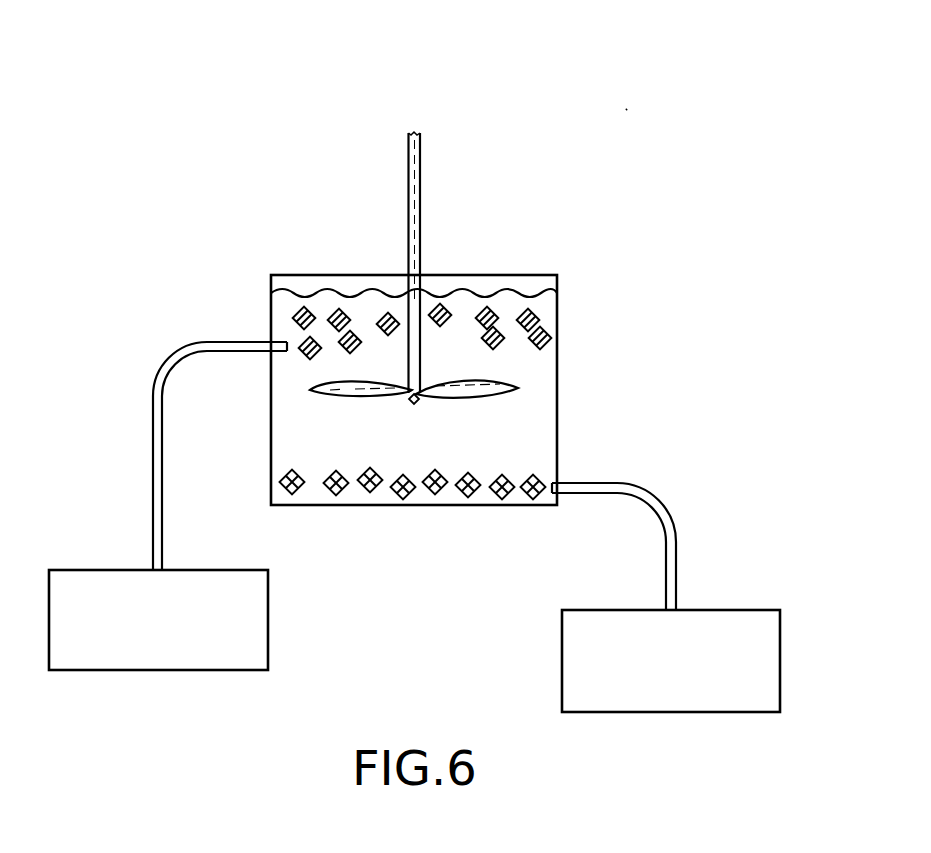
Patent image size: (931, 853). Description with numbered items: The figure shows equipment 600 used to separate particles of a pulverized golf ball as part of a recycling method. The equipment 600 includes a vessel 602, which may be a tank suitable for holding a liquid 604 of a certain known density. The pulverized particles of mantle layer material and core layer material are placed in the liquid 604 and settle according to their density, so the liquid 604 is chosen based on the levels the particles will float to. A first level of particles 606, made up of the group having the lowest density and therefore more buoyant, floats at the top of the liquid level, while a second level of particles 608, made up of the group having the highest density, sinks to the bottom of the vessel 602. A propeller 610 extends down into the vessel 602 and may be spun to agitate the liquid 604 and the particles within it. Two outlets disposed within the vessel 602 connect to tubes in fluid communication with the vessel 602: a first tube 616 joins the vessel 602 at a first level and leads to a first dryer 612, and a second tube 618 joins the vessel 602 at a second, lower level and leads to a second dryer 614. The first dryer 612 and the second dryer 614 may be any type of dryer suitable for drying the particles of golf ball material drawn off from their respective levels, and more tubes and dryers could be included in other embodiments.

The equipment 600 is at (630, 106).
The vessel 602 is at (557, 380).
The liquid 604 is at (332, 290).
The first level of particles 606 is at (493, 312).
The second level of particles 608 is at (496, 490).
The propeller 610 is at (408, 190).
The first dryer 612 is at (107, 570).
The second dryer 614 is at (730, 610).
The first tube 616 is at (178, 353).
The second tube 618 is at (645, 488).